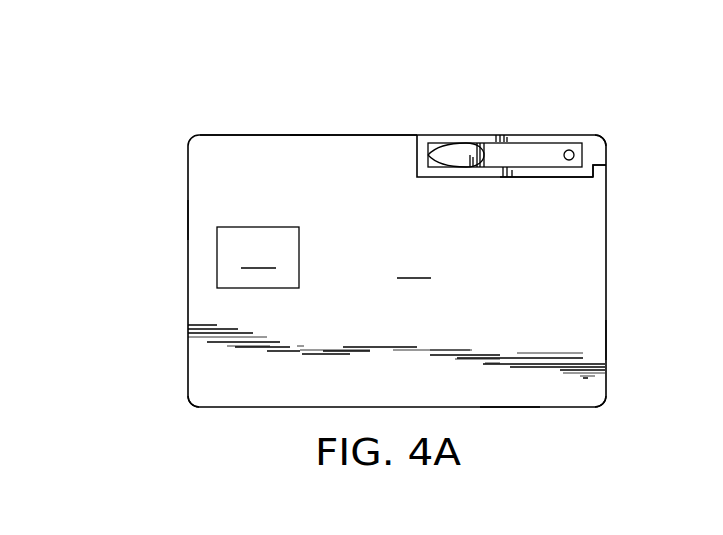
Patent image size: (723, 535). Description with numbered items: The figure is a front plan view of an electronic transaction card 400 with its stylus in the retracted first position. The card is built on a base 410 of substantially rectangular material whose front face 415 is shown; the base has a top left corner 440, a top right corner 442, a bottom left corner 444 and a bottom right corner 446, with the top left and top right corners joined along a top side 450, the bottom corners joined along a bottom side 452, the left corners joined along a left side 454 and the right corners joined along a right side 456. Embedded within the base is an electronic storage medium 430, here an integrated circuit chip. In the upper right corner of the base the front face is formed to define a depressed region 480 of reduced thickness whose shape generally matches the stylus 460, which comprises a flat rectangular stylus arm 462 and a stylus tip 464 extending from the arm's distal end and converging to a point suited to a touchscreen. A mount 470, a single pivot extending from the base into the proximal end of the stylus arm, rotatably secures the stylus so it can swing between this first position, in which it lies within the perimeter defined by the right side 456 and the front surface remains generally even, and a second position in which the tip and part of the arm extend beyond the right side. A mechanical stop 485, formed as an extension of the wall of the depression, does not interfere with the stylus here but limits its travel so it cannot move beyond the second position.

The electronic transaction card 400 is at (380, 73).
The base 410 is at (262, 380).
The front face 415 is at (415, 268).
The electronic storage medium 430 is at (258, 257).
The top left corner 440 is at (191, 137).
The top right corner 442 is at (606, 137).
The bottom left corner 444 is at (190, 408).
The bottom right corner 446 is at (604, 406).
The top side 450 is at (300, 135).
The bottom side 452 is at (508, 408).
The left side 454 is at (188, 220).
The right side 456 is at (606, 338).
The stylus 460 is at (564, 132).
The stylus arm 462 is at (516, 153).
The stylus tip 464 is at (455, 150).
The mount 470 is at (572, 158).
The depressed region 480 is at (555, 172).
The mechanical stop 485 is at (607, 180).